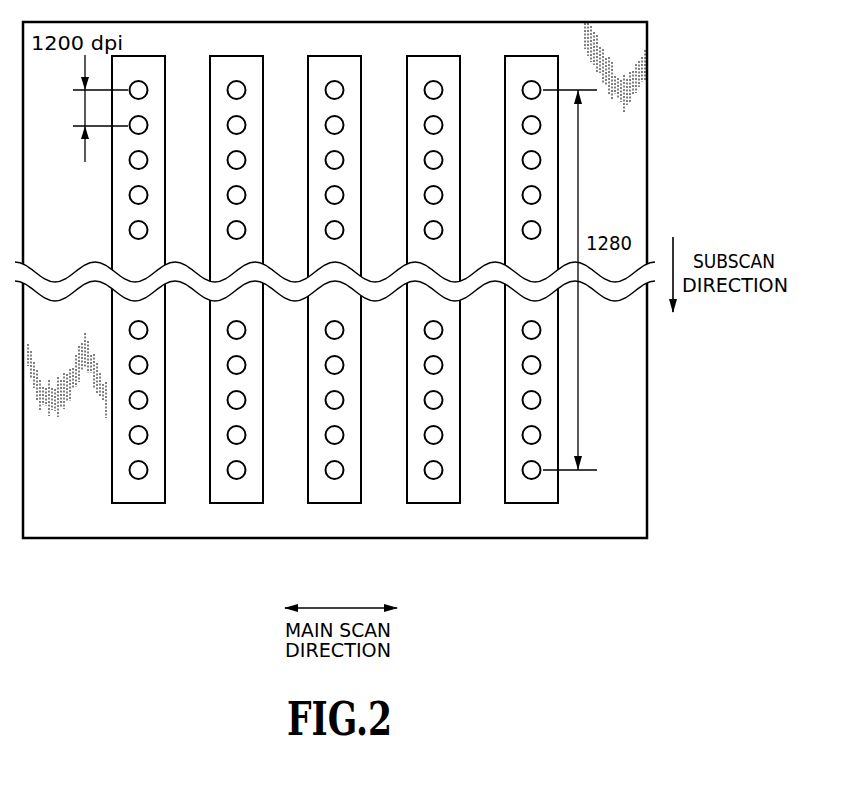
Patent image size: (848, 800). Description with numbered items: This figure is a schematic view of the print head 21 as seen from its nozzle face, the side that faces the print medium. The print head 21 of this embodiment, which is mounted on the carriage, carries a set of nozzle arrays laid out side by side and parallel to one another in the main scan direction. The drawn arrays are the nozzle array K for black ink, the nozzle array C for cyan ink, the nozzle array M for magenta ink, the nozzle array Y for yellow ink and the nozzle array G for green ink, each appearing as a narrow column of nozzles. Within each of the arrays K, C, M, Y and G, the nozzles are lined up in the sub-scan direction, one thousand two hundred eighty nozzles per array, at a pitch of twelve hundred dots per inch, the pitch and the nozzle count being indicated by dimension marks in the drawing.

The print head 21 is at (638, 433).
The nozzle array for black ink K is at (136, 511).
The nozzle array for cyan ink C is at (234, 511).
The nozzle array for magenta ink M is at (332, 511).
The nozzle array for yellow ink Y is at (431, 511).
The nozzle array for green ink G is at (529, 511).